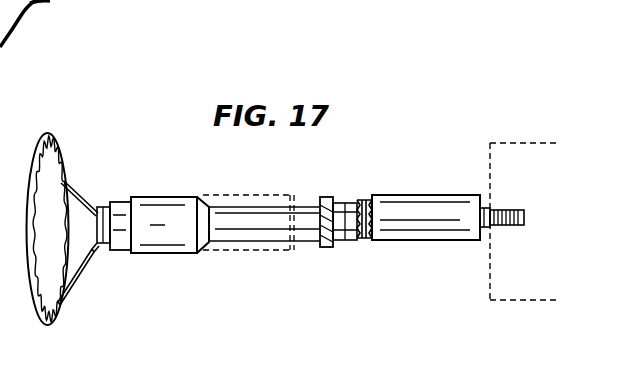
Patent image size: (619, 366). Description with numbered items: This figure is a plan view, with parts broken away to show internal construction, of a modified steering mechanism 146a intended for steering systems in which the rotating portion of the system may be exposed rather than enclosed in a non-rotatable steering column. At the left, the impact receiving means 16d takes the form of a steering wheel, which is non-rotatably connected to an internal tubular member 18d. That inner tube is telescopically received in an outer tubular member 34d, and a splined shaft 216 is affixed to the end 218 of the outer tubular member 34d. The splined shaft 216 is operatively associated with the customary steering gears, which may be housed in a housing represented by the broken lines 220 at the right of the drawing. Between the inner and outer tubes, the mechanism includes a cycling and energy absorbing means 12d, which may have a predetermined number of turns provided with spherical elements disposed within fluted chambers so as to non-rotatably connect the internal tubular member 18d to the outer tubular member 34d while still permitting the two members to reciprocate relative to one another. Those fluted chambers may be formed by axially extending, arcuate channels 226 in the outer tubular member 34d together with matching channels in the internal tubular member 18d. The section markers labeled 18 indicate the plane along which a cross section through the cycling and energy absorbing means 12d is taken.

The impact receiving means 16d is at (52, 140).
The modified steering mechanism 146a is at (250, 266).
The internal tubular member 18d is at (296, 206).
The arcuate channels 226 is at (327, 222).
The section line 18- 18 is at (366, 256).
The cycling and energy absorbing means 12d is at (374, 193).
The outer tubular member 34d is at (418, 206).
The end 218 is at (486, 200).
The splined shaft 216 is at (508, 212).
The broken lines 220 is at (496, 302).